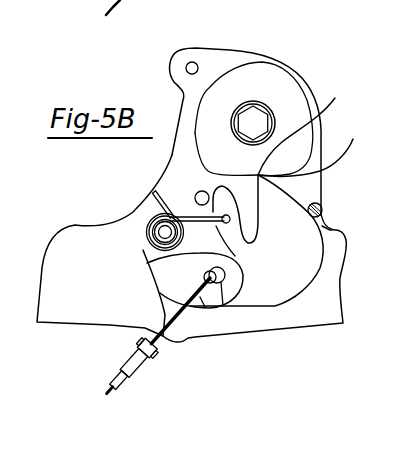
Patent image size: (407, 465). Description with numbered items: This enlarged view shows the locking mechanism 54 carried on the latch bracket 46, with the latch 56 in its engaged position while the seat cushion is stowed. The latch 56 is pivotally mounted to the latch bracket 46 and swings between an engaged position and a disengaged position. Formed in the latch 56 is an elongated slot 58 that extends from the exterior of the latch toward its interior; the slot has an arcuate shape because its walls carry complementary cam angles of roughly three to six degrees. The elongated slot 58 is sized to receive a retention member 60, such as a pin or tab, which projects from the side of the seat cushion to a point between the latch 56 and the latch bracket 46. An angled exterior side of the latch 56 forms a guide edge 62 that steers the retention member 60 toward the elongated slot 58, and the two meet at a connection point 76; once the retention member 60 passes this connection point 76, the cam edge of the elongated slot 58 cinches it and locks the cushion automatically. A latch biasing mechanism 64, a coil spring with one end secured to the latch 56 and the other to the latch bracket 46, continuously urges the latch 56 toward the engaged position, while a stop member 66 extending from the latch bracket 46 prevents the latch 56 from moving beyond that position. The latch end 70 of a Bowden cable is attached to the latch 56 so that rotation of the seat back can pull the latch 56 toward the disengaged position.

The latch bracket 46 is at (240, 52).
The locking mechanism 54 is at (320, 70).
The latch 56 is at (263, 297).
The elongated slot 58 is at (254, 204).
The retention member 60 is at (322, 217).
The guide edge 62 is at (312, 148).
The latch biasing mechanism 64 is at (158, 222).
The stop member 66 is at (200, 192).
The latch end 70 is at (165, 326).
The connection point 76 is at (303, 128).